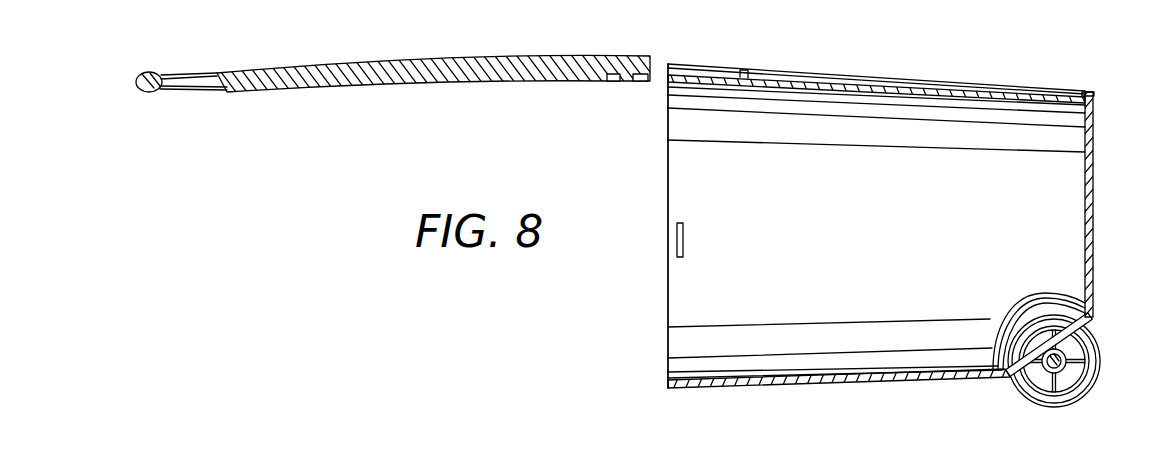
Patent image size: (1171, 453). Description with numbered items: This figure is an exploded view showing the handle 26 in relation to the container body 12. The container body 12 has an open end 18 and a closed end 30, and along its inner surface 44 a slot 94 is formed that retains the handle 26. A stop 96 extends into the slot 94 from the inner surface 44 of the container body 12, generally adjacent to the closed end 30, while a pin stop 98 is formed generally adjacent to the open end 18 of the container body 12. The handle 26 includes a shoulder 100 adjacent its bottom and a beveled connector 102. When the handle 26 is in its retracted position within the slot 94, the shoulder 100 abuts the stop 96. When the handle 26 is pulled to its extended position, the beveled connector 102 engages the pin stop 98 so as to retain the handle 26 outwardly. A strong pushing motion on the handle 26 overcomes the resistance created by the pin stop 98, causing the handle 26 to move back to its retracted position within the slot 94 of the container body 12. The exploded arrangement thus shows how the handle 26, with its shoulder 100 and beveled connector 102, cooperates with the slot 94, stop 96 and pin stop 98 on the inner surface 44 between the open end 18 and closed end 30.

The container body 12 is at (1090, 258).
The open end 18 is at (668, 335).
The handle 26 is at (313, 80).
The closed end 30 is at (1090, 175).
The inner surface 44 is at (890, 90).
The slot 94 is at (955, 82).
The stop 96 is at (1088, 92).
The pin stop 98 is at (750, 70).
The shoulder 100 is at (643, 82).
The beveled connector 102 is at (618, 77).